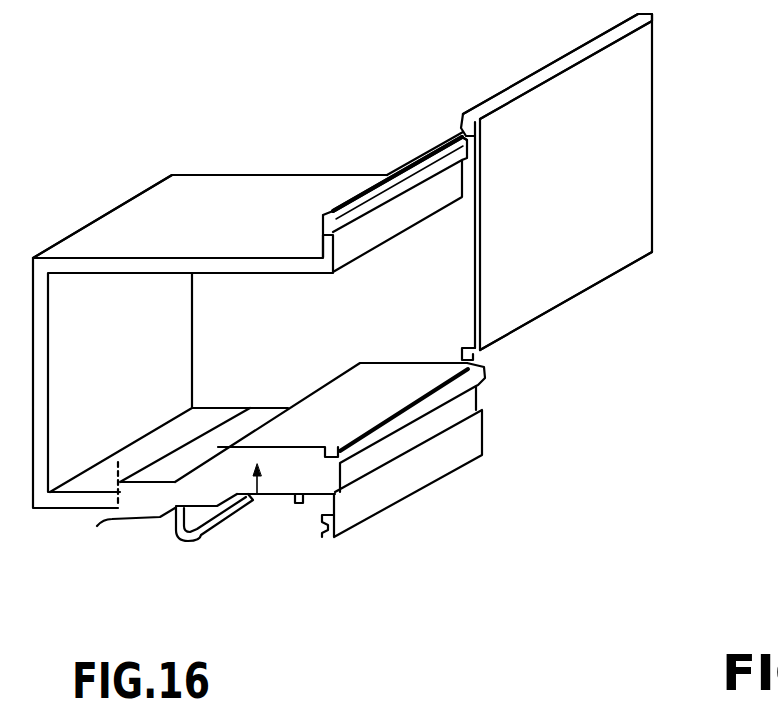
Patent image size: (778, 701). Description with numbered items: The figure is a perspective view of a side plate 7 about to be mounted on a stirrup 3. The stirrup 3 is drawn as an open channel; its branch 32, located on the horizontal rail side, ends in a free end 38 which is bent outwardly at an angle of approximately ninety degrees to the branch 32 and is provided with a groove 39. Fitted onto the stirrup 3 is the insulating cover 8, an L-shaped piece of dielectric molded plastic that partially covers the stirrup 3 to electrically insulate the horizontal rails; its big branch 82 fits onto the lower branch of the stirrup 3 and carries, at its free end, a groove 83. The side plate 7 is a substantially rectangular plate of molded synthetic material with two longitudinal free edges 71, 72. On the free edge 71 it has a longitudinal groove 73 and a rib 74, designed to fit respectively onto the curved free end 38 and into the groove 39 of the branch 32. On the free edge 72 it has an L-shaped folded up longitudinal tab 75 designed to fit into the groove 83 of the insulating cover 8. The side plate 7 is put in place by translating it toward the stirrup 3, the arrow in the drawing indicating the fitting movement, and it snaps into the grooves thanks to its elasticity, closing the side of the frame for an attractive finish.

The stirrup 3 is at (218, 167).
The branch of the stirrup 32 is at (160, 200).
The free end of the stirrup 38 is at (320, 250).
The groove of the stirrup 39 is at (393, 197).
The side plate 7 is at (625, 152).
The free edge of the side plate 71 is at (610, 42).
The free edge of the side plate 72 is at (543, 318).
The longitudinal groove 73 is at (458, 130).
The rib 74 is at (462, 135).
The L-shaped folded up longitudinal tab 75 is at (463, 343).
The big branch of the insulating cover 82 is at (252, 420).
The groove of the insulating cover 83 is at (332, 470).
The insulating cover 8 is at (256, 500).